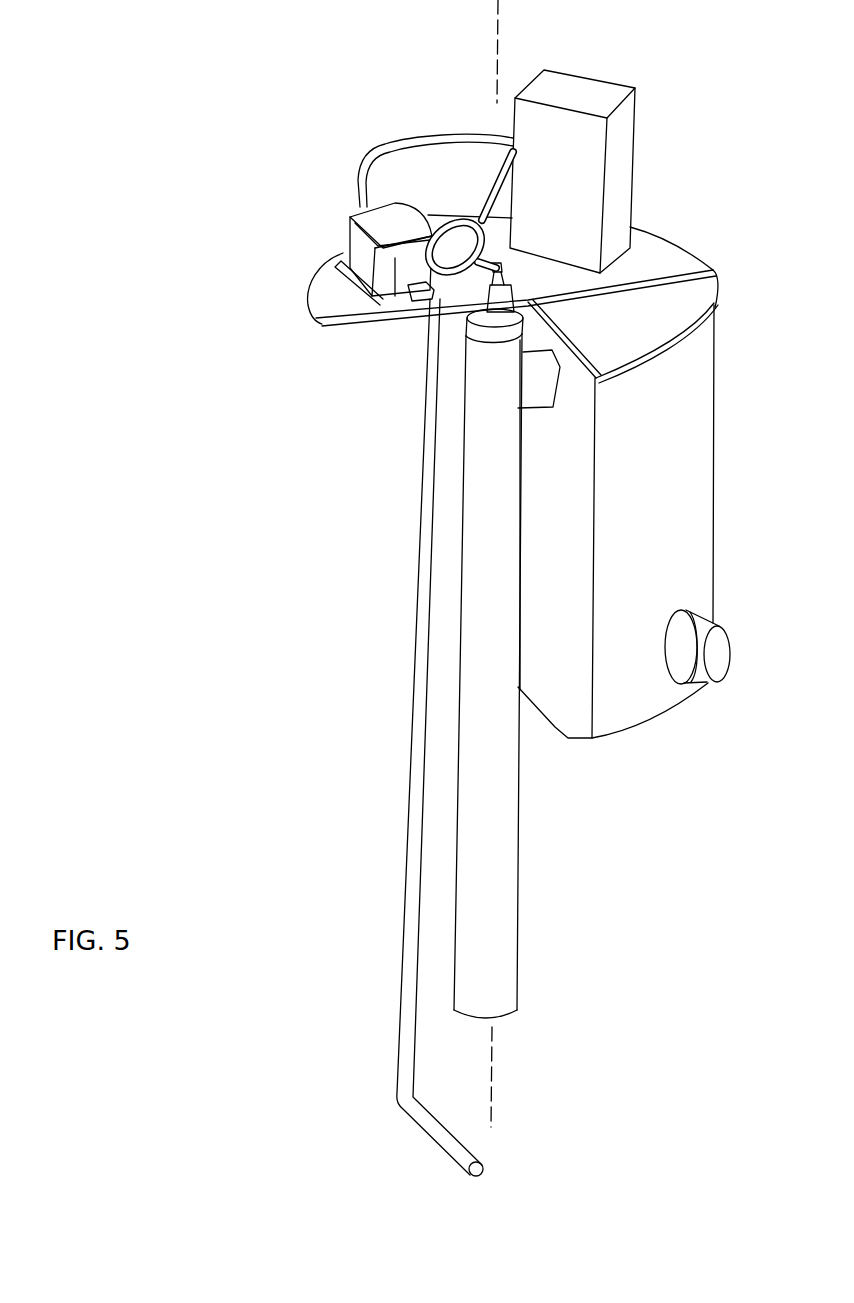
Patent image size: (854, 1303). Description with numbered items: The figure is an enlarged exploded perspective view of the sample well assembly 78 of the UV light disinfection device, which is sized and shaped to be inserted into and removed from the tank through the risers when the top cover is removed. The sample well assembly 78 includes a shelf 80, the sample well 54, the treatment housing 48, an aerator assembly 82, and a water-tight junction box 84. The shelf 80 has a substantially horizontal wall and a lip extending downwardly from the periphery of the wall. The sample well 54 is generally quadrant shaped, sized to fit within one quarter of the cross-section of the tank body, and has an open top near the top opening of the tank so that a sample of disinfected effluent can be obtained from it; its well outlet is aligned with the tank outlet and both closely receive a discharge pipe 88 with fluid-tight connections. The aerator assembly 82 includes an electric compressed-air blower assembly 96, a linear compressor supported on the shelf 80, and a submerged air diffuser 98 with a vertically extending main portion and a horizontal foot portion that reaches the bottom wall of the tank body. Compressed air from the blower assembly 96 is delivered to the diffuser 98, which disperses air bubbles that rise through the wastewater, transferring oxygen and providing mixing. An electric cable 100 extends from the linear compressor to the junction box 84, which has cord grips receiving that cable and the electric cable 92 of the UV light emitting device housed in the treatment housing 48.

The sample well assembly 78 is at (308, 78).
The shelf 80 is at (327, 297).
The aerator assembly 82 is at (357, 253).
The junction box 84 is at (572, 158).
The discharge pipe 88 is at (693, 667).
The electric cable 92 is at (483, 205).
The blower assembly 96 is at (352, 215).
The diffuser 98 is at (420, 457).
The electric cable 100 is at (390, 143).
The treatment housing 48 is at (490, 823).
The sample well 54 is at (615, 707).